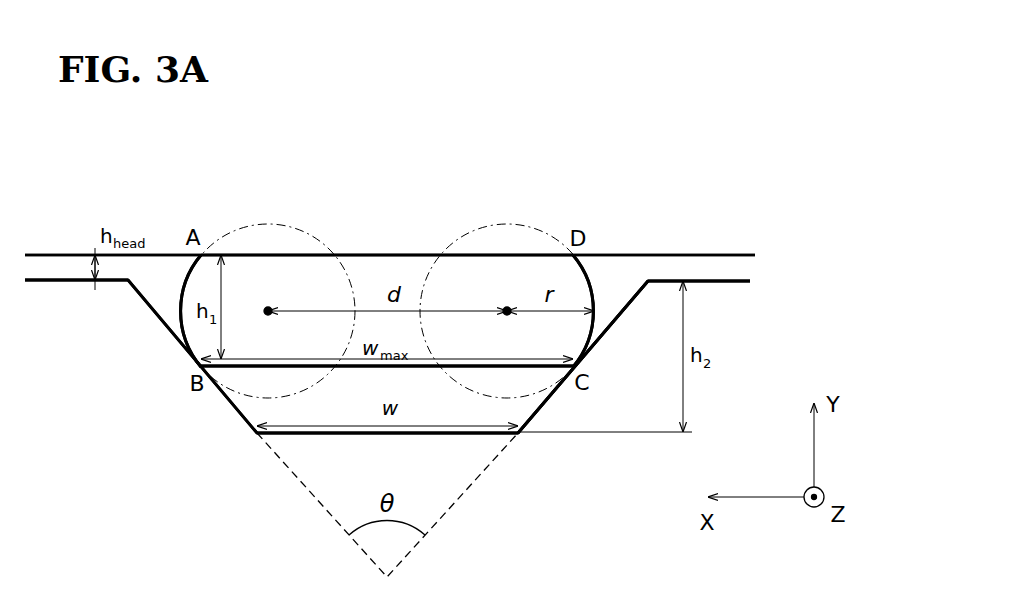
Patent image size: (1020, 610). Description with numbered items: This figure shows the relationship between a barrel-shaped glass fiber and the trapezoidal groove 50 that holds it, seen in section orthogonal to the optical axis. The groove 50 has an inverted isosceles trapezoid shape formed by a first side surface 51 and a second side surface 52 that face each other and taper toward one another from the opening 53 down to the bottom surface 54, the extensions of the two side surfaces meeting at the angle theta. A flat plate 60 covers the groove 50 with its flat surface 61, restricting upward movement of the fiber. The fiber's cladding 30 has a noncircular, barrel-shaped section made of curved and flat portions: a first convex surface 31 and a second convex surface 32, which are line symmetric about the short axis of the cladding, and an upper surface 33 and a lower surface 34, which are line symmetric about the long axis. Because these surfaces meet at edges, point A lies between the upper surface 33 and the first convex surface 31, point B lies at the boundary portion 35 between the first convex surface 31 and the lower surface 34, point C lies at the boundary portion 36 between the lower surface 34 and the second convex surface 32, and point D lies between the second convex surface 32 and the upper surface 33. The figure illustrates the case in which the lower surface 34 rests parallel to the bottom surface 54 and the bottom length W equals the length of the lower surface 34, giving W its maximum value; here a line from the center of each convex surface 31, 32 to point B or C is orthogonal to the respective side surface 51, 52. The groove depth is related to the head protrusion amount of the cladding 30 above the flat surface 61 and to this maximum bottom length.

The flat plate 60 is at (132, 198).
The flat surface 61 is at (38, 255).
The trapezoidal groove 50 is at (230, 413).
The first side surface 51 is at (143, 302).
The second side surface 52 is at (635, 293).
The opening 53 is at (617, 278).
The bottom surface 54 is at (497, 432).
The boundary portion 35 is at (200, 366).
The boundary portion 36 is at (577, 367).
The cladding 30 is at (352, 240).
The first convex surface 31 is at (188, 276).
The second convex surface 32 is at (592, 272).
The upper surface 33 is at (416, 255).
The lower surface 34 is at (418, 368).